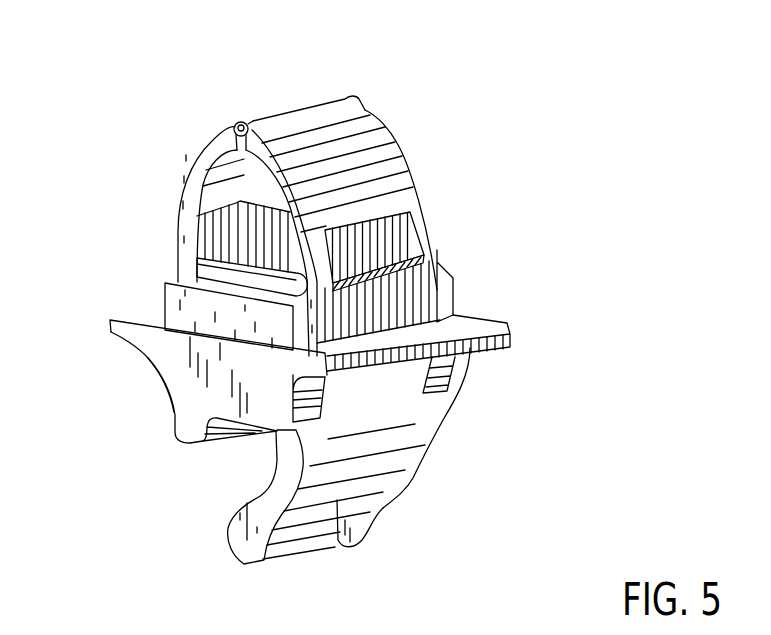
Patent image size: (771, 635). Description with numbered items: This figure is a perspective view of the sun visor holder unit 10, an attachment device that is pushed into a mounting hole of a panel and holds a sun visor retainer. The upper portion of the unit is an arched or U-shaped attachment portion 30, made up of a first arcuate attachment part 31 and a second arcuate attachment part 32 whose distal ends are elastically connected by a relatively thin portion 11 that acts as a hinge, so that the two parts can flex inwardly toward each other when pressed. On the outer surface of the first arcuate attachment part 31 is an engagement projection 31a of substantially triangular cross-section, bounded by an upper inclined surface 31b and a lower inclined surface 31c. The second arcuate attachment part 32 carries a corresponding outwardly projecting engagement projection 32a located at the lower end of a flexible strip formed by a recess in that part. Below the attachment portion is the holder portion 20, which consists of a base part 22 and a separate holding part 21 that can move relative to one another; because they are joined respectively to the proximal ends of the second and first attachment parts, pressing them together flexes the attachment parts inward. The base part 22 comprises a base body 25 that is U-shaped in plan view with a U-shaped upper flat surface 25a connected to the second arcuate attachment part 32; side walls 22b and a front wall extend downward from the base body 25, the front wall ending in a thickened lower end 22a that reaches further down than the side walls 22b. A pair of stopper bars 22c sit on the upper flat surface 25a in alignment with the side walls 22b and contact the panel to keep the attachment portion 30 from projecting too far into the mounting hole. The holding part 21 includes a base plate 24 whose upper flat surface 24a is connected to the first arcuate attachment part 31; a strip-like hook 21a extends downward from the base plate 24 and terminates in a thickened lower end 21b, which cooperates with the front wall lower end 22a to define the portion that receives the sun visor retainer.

The sun visor holder unit 10 is at (385, 113).
The thin portion 11 is at (307, 103).
The holder portion 20 is at (165, 440).
The holding part 21 is at (383, 413).
The hook 21a is at (363, 553).
The thickened lower end 21b is at (242, 500).
The base part 22 is at (170, 398).
The thickened lower end 22a is at (207, 442).
The side walls 22b is at (165, 367).
The stopper bars 22c is at (163, 293).
The base plate 24 is at (400, 365).
The upper flat surface 24a is at (417, 337).
The base body 25 is at (512, 326).
The upper flat surface 25a is at (140, 316).
The attachment portion 30 is at (399, 165).
The first arcuate attachment part 31 is at (408, 190).
The engagement projection 31a is at (345, 283).
The upper inclined surface 31b is at (403, 240).
The lower inclined surface 31c is at (405, 287).
The second arcuate attachment part 32 is at (207, 157).
The engagement projection 32a is at (245, 212).